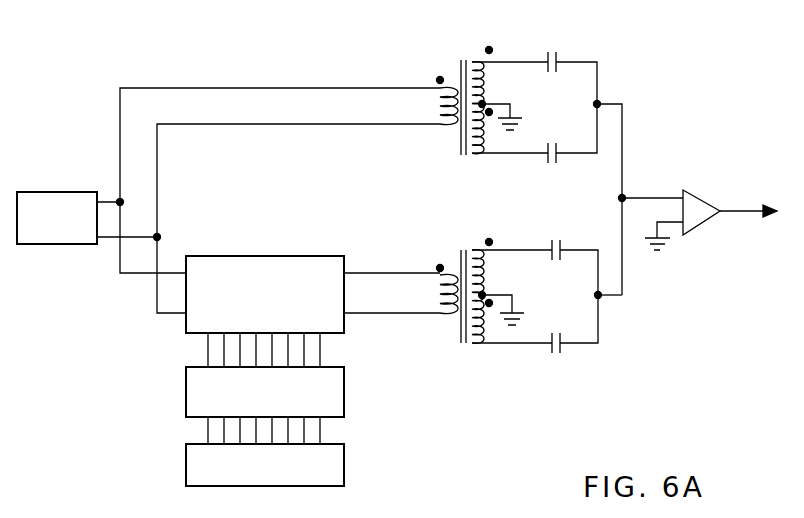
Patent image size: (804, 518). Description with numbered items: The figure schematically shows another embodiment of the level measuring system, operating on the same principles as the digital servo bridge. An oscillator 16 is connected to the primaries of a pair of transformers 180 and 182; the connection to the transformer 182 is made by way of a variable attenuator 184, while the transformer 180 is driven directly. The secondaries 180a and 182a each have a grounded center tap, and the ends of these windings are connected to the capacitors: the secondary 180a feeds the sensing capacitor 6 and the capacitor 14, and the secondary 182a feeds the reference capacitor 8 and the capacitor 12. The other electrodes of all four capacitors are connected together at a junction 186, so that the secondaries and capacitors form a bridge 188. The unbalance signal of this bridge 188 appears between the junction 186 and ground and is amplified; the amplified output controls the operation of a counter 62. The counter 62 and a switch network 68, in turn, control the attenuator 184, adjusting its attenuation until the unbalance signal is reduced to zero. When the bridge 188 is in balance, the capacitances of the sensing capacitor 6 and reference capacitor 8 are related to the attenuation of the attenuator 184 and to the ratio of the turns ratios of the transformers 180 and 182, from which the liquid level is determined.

The oscillator 16 is at (71, 238).
The variable attenuator 184 is at (288, 264).
The switch network 68 is at (190, 388).
The counter 62 is at (336, 485).
The transformer 180 is at (455, 85).
The secondary winding of transformer 180 180a is at (472, 62).
The sensing capacitor 6 is at (560, 51).
The capacitor 14 is at (553, 152).
The transformer 182 is at (470, 297).
The secondary winding of transformer 182 182a is at (472, 250).
The capacitor 12 is at (560, 247).
The reference capacitor 8 is at (560, 351).
The junction 186 is at (622, 198).
The bridge 188 is at (535, 331).